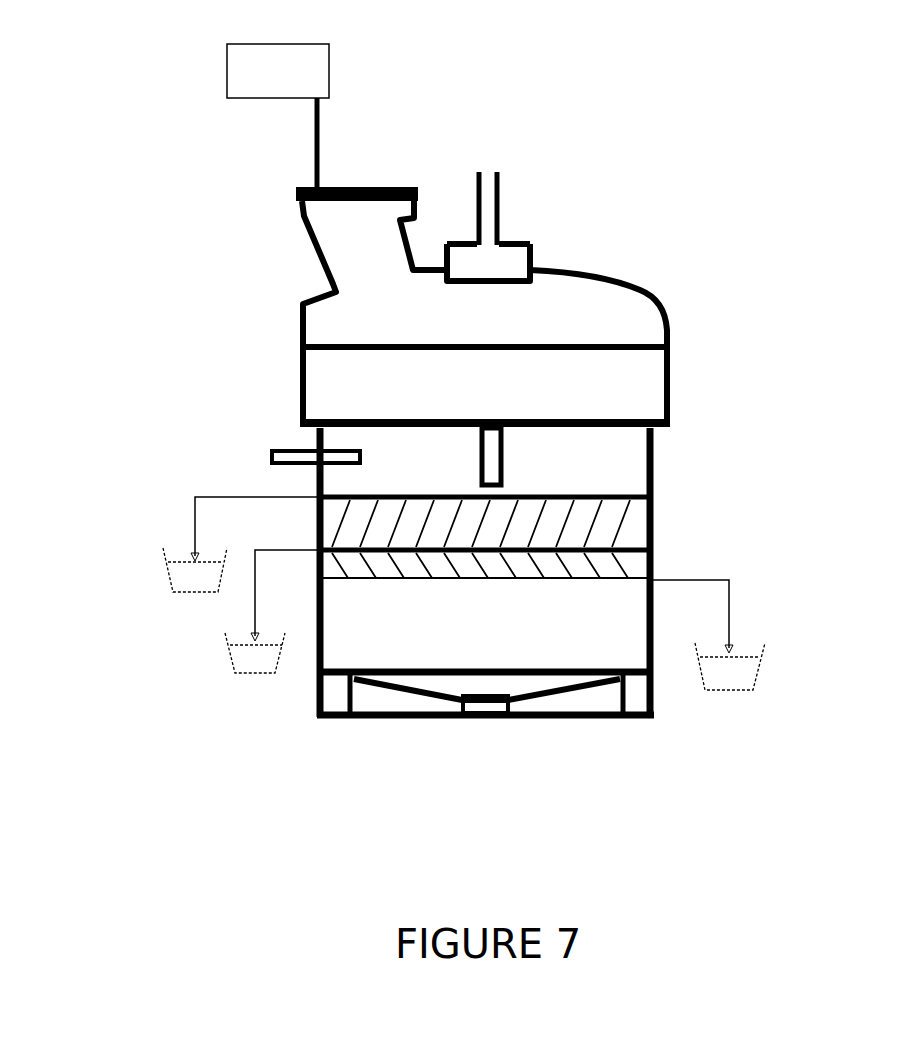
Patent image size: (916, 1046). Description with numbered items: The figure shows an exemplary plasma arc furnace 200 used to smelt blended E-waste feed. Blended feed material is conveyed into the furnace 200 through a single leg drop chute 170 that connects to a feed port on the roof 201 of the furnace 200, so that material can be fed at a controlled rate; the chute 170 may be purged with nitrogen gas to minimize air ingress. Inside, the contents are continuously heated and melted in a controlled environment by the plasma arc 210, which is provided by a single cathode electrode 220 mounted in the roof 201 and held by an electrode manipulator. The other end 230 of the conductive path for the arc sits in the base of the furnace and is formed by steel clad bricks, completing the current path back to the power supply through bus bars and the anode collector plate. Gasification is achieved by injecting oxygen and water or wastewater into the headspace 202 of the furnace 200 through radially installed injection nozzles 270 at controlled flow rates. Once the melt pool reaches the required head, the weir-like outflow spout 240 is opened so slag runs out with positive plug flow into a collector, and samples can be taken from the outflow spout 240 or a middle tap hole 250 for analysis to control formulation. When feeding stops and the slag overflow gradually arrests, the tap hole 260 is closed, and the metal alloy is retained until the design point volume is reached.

The single leg drop chute 170 is at (330, 55).
The furnace 200 is at (439, 447).
The roof 201 is at (668, 313).
The headspace 202 is at (318, 440).
The plasma arc 210 is at (511, 220).
The single cathode electrode 220 is at (505, 474).
The other end of the conductive path 230 is at (483, 738).
The outflow spout 240 is at (150, 573).
The middle tap hole 250 is at (205, 668).
The tap hole 260 is at (783, 640).
The injection nozzle 270 is at (262, 455).